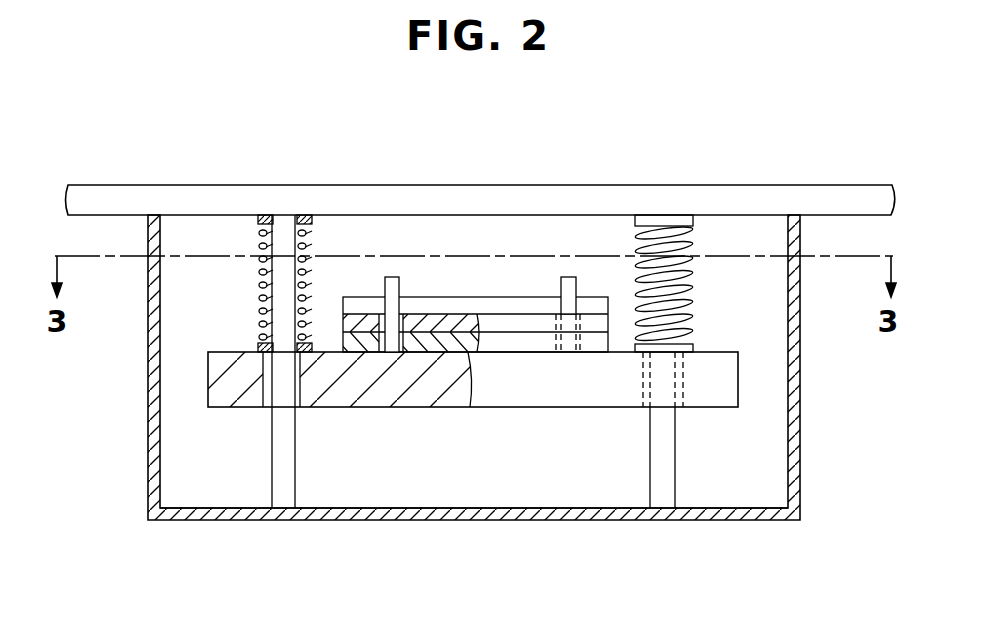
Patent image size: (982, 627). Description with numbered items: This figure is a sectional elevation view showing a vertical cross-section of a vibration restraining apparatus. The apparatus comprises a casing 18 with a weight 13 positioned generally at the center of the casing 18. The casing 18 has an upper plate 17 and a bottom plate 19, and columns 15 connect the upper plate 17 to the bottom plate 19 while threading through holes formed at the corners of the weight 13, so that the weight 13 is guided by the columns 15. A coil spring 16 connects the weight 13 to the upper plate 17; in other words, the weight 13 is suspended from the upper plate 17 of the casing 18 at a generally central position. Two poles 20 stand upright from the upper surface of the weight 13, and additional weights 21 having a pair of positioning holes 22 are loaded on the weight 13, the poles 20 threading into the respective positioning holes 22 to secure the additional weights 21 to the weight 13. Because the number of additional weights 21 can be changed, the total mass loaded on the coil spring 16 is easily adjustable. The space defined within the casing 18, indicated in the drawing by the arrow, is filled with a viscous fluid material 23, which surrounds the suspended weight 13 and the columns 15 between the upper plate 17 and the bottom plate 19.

The weight 13 is at (740, 377).
The columns 15 is at (288, 480).
The coil spring 16 is at (258, 236).
The upper plate 17 is at (200, 197).
The casing 18 is at (803, 460).
The bottom plate 19 is at (590, 521).
The poles 20 is at (390, 277).
The additional weights 21 is at (352, 315).
The positioning holes 22 is at (396, 304).
The viscous fluid material 23 is at (183, 446).